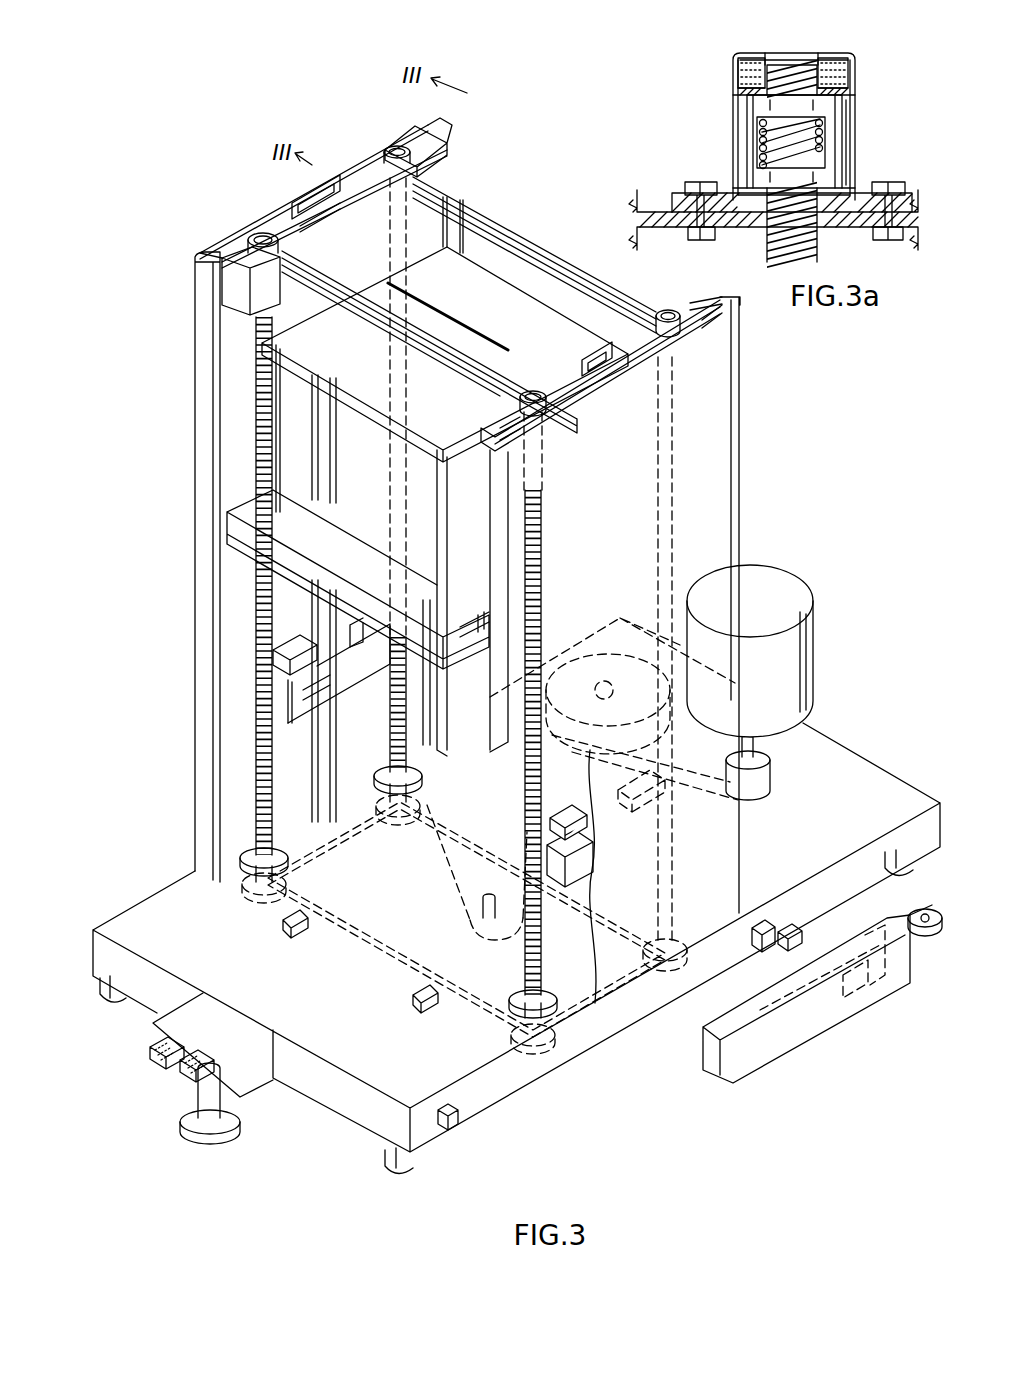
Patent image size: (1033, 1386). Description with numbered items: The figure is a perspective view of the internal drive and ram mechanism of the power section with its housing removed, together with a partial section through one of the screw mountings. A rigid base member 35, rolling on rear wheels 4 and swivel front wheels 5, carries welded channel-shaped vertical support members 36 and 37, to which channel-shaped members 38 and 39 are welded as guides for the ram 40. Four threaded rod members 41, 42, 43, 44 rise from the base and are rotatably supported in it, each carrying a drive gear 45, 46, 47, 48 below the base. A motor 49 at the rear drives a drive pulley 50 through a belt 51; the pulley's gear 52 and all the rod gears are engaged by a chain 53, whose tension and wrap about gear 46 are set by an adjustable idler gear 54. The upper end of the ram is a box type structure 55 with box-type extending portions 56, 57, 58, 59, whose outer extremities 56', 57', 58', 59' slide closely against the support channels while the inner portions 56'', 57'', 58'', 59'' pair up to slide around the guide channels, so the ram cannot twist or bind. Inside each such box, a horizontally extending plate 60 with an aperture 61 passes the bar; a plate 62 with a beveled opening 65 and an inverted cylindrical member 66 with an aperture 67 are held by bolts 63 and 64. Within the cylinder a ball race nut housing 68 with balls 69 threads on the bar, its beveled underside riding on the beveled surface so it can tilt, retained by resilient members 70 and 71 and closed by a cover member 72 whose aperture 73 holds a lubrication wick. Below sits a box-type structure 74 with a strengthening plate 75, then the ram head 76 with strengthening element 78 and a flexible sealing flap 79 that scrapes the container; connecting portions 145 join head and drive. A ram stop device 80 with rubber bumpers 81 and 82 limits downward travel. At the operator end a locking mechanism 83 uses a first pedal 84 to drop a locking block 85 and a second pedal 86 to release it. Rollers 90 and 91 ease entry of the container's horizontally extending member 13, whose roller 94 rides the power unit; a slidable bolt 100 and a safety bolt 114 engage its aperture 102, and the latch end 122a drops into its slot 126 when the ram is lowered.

In FIG. 3, the rear wheels 4 is at (893, 873).
In FIG. 3, the swivel front wheels 5 is at (104, 1000).
In FIG. 3, the horizontally extending member 13 is at (760, 1052).
In FIG. 3, the base member 35 is at (825, 728).
In FIG. 3, the vertical support member 36 is at (192, 425).
In FIG. 3, the vertical support member 37 is at (740, 398).
In FIG. 3, the channel-shaped member 38 is at (340, 193).
In FIG. 3, the channel-shaped member 39 is at (590, 395).
In FIG. 3, the ram 40 is at (542, 233).
In FIG. 3, the threaded rod member 41 is at (262, 360).
In FIG. 3A, the threaded rod member 41 is at (767, 241).
In FIG. 3, the threaded rod member 42 is at (408, 772).
In FIG. 3, the threaded rod member 43 is at (525, 978).
In FIG. 3, the threaded rod member 44 is at (670, 872).
In FIG. 3, the drive gear 45 is at (288, 880).
In FIG. 3, the drive gear 46 is at (410, 832).
In FIG. 3, the drive gear 47 is at (510, 1038).
In FIG. 3, the drive gear 48 is at (657, 962).
In FIG. 3, the motor 49 is at (813, 627).
In FIG. 3, the drive pulley 50 is at (600, 652).
In FIG. 3, the belt 51 is at (771, 774).
In FIG. 3, the gear 52 is at (597, 714).
In FIG. 3, the chain 53 is at (440, 880).
In FIG. 3, the idler gear 54 is at (467, 936).
In FIG. 3, the box type structure 55 is at (573, 278).
In FIG. 3, the box-type extending portion 56 is at (215, 251).
In FIG. 3, the outer extremity 56' is at (178, 243).
In FIG. 3, the inner portion 56'' is at (276, 193).
In FIG. 3, the box-type extending portion 57 is at (323, 176).
In FIG. 3, the outer extremity 57' is at (408, 135).
In FIG. 3, the inner portion 57'' is at (342, 177).
In FIG. 3, the box-type extending portion 58 is at (539, 442).
In FIG. 3, the outer extremity 58' is at (429, 346).
In FIG. 3, the inner portion 58'' is at (428, 334).
In FIG. 3, the box-type extending portion 59 is at (704, 283).
In FIG. 3, the outer extremity 59' is at (732, 295).
In FIG. 3, the inner portion 59'' is at (600, 375).
In FIG. 3A, the horizontally extending plate 60 is at (641, 212).
In FIG. 3A, the aperture 61 is at (818, 240).
In FIG. 3A, the plate 62 is at (698, 194).
In FIG. 3A, the bolt 63 is at (730, 193).
In FIG. 3A, the bolt 64 is at (889, 182).
In FIG. 3A, the beveled opening 65 is at (841, 184).
In FIG. 3A, the inverted cylindrical member 66 is at (733, 131).
In FIG. 3A, the aperture 67 is at (800, 62).
In FIG. 3A, the nut housing 68 is at (828, 122).
In FIG. 3A, the balls 69 is at (824, 143).
In FIG. 3A, the resilient member 70 is at (738, 92).
In FIG. 3A, the resilient member 71 is at (846, 100).
In FIG. 3A, the cover member 72 is at (738, 72).
In FIG. 3A, the aperture 73 is at (740, 56).
In FIG. 3, the box-type structure 74 is at (285, 414).
In FIG. 3, the strengthening plate 75 is at (452, 308).
In FIG. 3, the ram head 76 is at (447, 702).
In FIG. 3, the strengthening element 78 is at (478, 612).
In FIG. 3, the sealing flap 79 is at (238, 510).
In FIG. 3, the ram stop device 80 is at (344, 684).
In FIG. 3, the rubber bumper 81 is at (312, 668).
In FIG. 3, the rubber bumper 82 is at (322, 690).
In FIG. 3, the locking mechanism 83 is at (132, 1064).
In FIG. 3, the first pedal 84 is at (150, 1073).
In FIG. 3, the locking block 85 is at (240, 1135).
In FIG. 3, the second pedal 86 is at (186, 1087).
In FIG. 3, the roller 90 is at (292, 936).
In FIG. 3, the roller 91 is at (420, 1010).
In FIG. 3, the roller 94 is at (925, 935).
In FIG. 3, the slidable bolt 100 is at (758, 920).
In FIG. 3, the aperture 102 is at (852, 1020).
In FIG. 3, the bolt 114 is at (458, 1122).
In FIG. 3, the latch end 122a is at (790, 928).
In FIG. 3, the slot 126 is at (880, 1000).
In FIG. 3, the ram connecting portions 145 is at (437, 177).